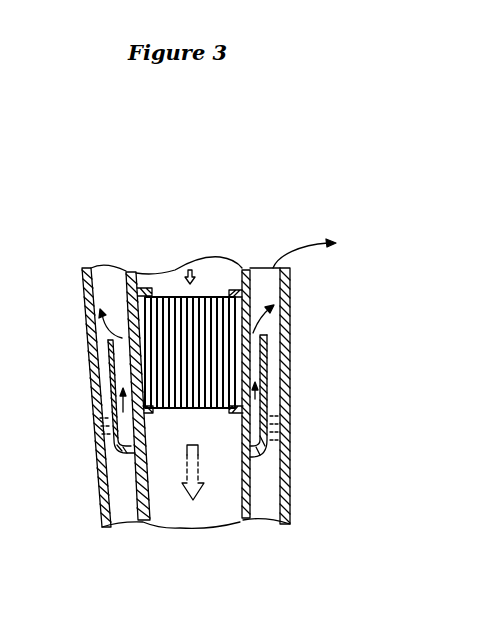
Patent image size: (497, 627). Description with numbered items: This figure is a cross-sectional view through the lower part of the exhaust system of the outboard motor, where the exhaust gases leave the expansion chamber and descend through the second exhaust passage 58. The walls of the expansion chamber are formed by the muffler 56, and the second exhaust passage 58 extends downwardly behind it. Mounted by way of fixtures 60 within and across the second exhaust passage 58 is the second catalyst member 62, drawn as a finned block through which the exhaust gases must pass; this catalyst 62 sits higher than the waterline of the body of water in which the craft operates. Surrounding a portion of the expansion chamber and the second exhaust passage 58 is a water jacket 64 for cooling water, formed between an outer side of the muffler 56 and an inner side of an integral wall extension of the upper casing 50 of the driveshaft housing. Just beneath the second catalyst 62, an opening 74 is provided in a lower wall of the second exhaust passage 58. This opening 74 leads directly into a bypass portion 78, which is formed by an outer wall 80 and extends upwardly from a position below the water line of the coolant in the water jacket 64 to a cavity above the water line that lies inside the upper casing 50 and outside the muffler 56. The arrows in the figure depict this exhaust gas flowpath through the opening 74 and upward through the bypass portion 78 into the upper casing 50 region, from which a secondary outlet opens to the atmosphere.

The upper casing 50 is at (290, 310).
The muffler 56 is at (262, 268).
The second exhaust passage 58 is at (232, 513).
The fixtures 60 is at (145, 285).
The second catalyst member 62 is at (168, 297).
The water jacket 64 is at (270, 479).
The opening 74 is at (143, 522).
The bypass portion 78 is at (112, 363).
The outer wall 80 is at (112, 393).